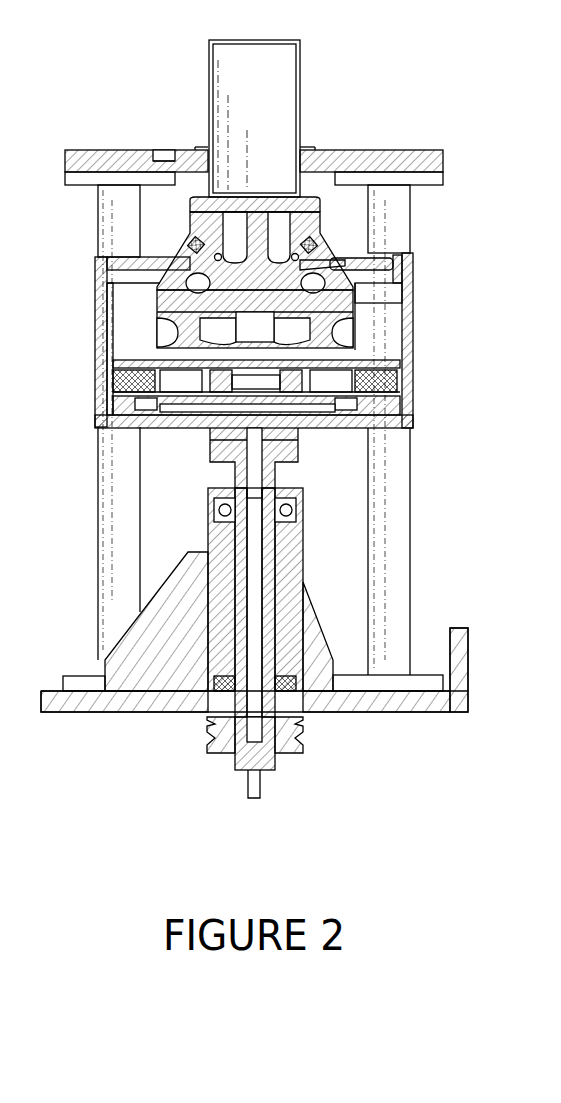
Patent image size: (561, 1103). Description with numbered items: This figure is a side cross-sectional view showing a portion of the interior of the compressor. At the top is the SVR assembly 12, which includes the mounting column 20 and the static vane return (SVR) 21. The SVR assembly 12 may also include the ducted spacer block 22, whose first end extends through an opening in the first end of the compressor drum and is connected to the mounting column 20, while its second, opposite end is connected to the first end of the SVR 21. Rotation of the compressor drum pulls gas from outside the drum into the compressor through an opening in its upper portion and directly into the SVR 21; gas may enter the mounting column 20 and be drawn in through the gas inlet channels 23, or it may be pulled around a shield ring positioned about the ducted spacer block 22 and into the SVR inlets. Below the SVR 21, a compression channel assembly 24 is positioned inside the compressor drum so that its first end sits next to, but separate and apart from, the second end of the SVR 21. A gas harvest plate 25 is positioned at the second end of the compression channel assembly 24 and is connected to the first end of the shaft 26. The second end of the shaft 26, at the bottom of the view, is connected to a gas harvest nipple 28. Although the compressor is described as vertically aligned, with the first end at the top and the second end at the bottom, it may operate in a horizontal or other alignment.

The SVR assembly 12 is at (207, 50).
The mounting column 20 is at (260, 182).
The gas inlet channels 23 is at (220, 222).
The ducted spacer block 22 is at (286, 272).
The static vane return 21 is at (172, 326).
The compression channel assembly 24 is at (108, 380).
The gas harvest plate 25 is at (330, 422).
The shaft 26 is at (207, 452).
The gas harvest nipple 28 is at (240, 782).